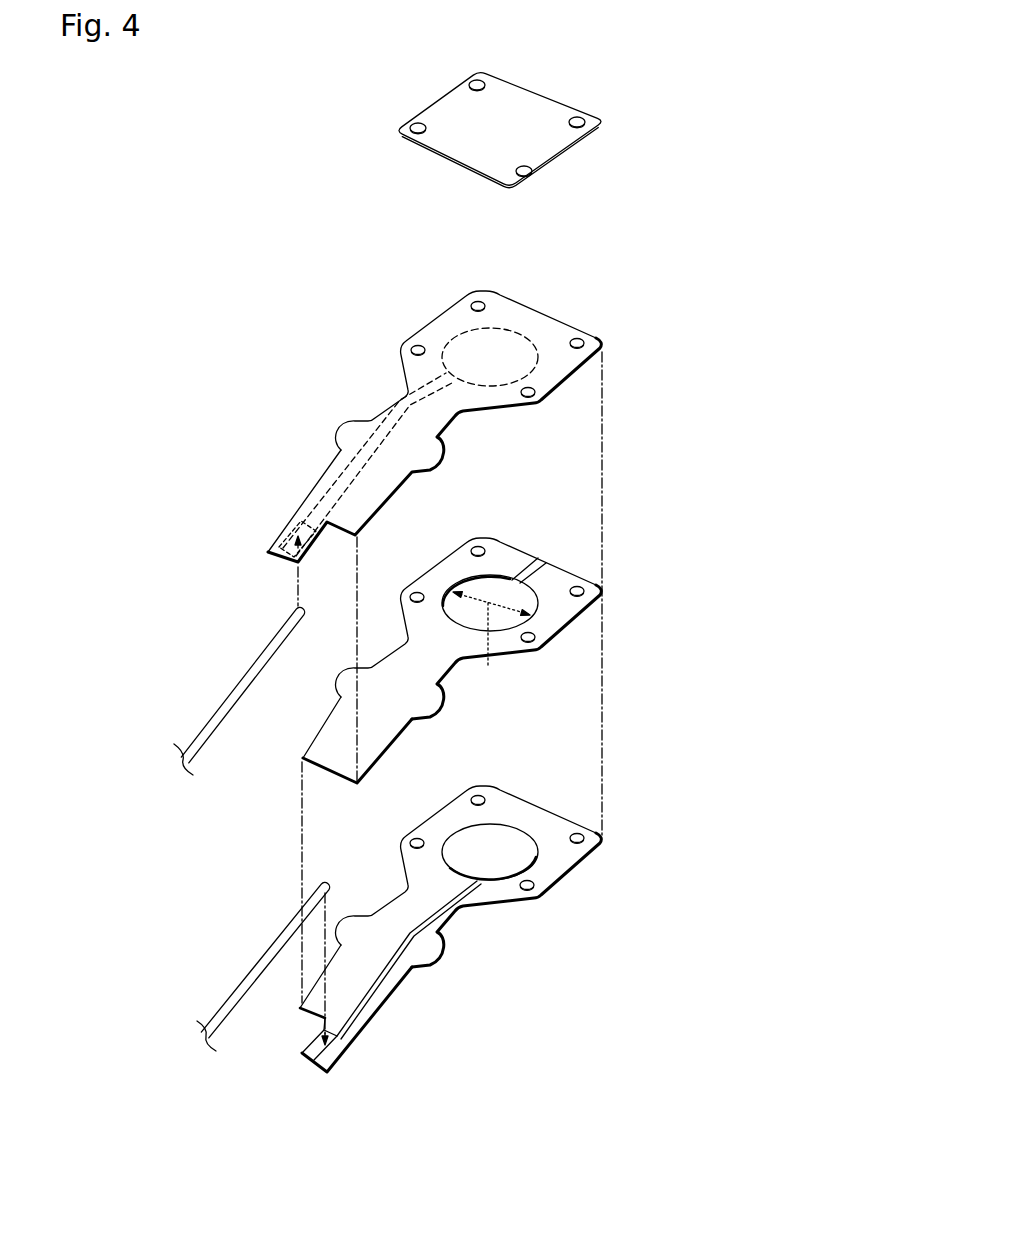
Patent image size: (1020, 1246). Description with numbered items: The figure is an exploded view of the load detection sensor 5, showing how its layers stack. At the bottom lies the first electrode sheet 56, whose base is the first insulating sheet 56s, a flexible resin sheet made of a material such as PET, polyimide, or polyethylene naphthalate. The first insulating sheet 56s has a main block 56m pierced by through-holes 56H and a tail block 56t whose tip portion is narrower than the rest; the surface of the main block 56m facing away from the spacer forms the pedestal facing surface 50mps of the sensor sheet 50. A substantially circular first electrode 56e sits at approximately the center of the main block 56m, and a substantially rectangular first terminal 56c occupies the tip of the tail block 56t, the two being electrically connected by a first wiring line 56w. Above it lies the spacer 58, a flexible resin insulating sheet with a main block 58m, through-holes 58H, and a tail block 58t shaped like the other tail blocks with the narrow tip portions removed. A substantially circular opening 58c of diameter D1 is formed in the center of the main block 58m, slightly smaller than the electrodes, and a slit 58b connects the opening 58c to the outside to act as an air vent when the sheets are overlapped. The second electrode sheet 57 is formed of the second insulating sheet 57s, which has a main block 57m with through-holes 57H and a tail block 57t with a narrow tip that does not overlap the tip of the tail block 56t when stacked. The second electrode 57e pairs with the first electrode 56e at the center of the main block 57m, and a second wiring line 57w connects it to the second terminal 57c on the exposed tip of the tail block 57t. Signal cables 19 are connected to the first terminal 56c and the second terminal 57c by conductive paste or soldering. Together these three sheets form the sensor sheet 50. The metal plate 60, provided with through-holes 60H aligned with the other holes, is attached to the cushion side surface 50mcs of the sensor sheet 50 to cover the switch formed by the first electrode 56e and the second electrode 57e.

The load detection sensor 5 is at (513, 557).
The signal cables 19 is at (227, 702).
The sensor sheet 50 is at (497, 648).
The cushion side surface 50mcs is at (604, 359).
The pedestal facing surface 50mps is at (568, 894).
The first electrode sheet 56 is at (562, 753).
The through-holes 56H is at (480, 796).
The first terminal 56c is at (317, 1053).
The first electrode 56e is at (512, 850).
The main block 56m is at (462, 812).
The first insulating sheet 56s is at (478, 796).
The tail block 56t is at (377, 993).
The first wiring line 56w is at (410, 930).
The second electrode sheet 57 is at (593, 407).
The through-holes 57H is at (481, 301).
The second terminal 57c is at (283, 547).
The second electrode 57e is at (520, 348).
The main block 57m is at (443, 320).
The second insulating sheet 57s is at (477, 297).
The tail block 57t is at (340, 470).
The second wiring line 57w is at (383, 423).
The spacer 58 is at (625, 583).
The through-holes 58H is at (478, 546).
The slit 58b is at (547, 560).
The opening 58c is at (482, 587).
The main block 58m is at (513, 553).
The tail block 58t is at (338, 753).
The diameter of the opening D1 is at (491, 643).
The metal plate 60 is at (572, 158).
The through-holes 60H is at (477, 80).